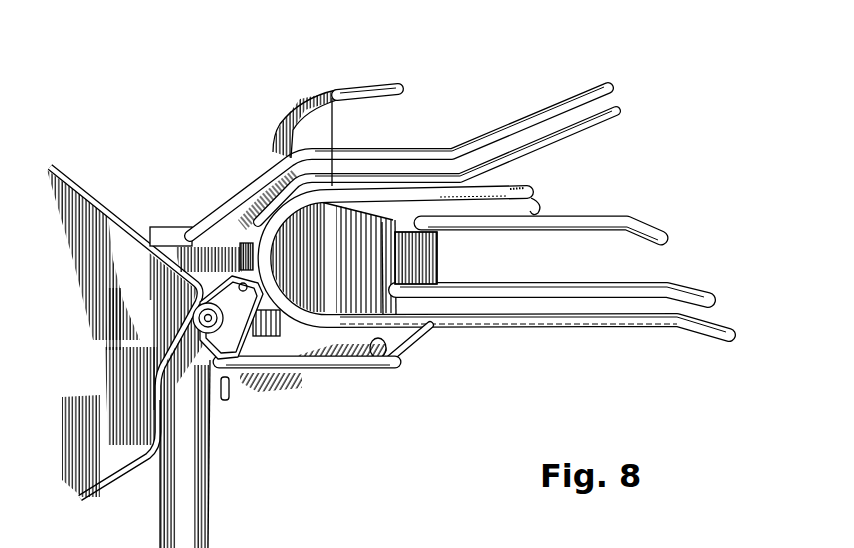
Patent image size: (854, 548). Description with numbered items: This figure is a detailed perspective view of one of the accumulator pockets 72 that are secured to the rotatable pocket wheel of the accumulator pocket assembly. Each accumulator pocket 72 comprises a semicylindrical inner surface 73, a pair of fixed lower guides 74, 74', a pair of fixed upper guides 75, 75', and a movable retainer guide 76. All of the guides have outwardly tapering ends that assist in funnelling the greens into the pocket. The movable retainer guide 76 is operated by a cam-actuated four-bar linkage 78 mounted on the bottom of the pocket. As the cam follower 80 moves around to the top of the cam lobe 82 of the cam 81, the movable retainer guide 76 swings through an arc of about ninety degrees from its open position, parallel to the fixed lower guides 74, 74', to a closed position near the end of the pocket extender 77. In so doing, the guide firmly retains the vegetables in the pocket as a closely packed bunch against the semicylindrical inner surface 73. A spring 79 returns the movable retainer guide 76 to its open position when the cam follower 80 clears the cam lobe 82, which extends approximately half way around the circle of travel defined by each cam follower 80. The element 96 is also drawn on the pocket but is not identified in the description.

The accumulator pocket 72 is at (281, 120).
The semicylindrical inner surface 73 is at (353, 251).
The fixed lower guide 74 is at (522, 264).
The fixed lower guide 74' is at (578, 286).
The fixed upper guide 75 is at (464, 159).
The fixed upper guide 75' is at (418, 139).
The movable retainer guide 76 is at (667, 236).
The pocket extender 77 is at (399, 83).
The cam-actuated 4-bar linkage 78 is at (407, 360).
The spring 79 is at (299, 378).
The cam follower 80 is at (196, 318).
The cam 81 is at (118, 458).
The cam lobe 82 is at (135, 212).
The retaining tube 96 is at (526, 186).